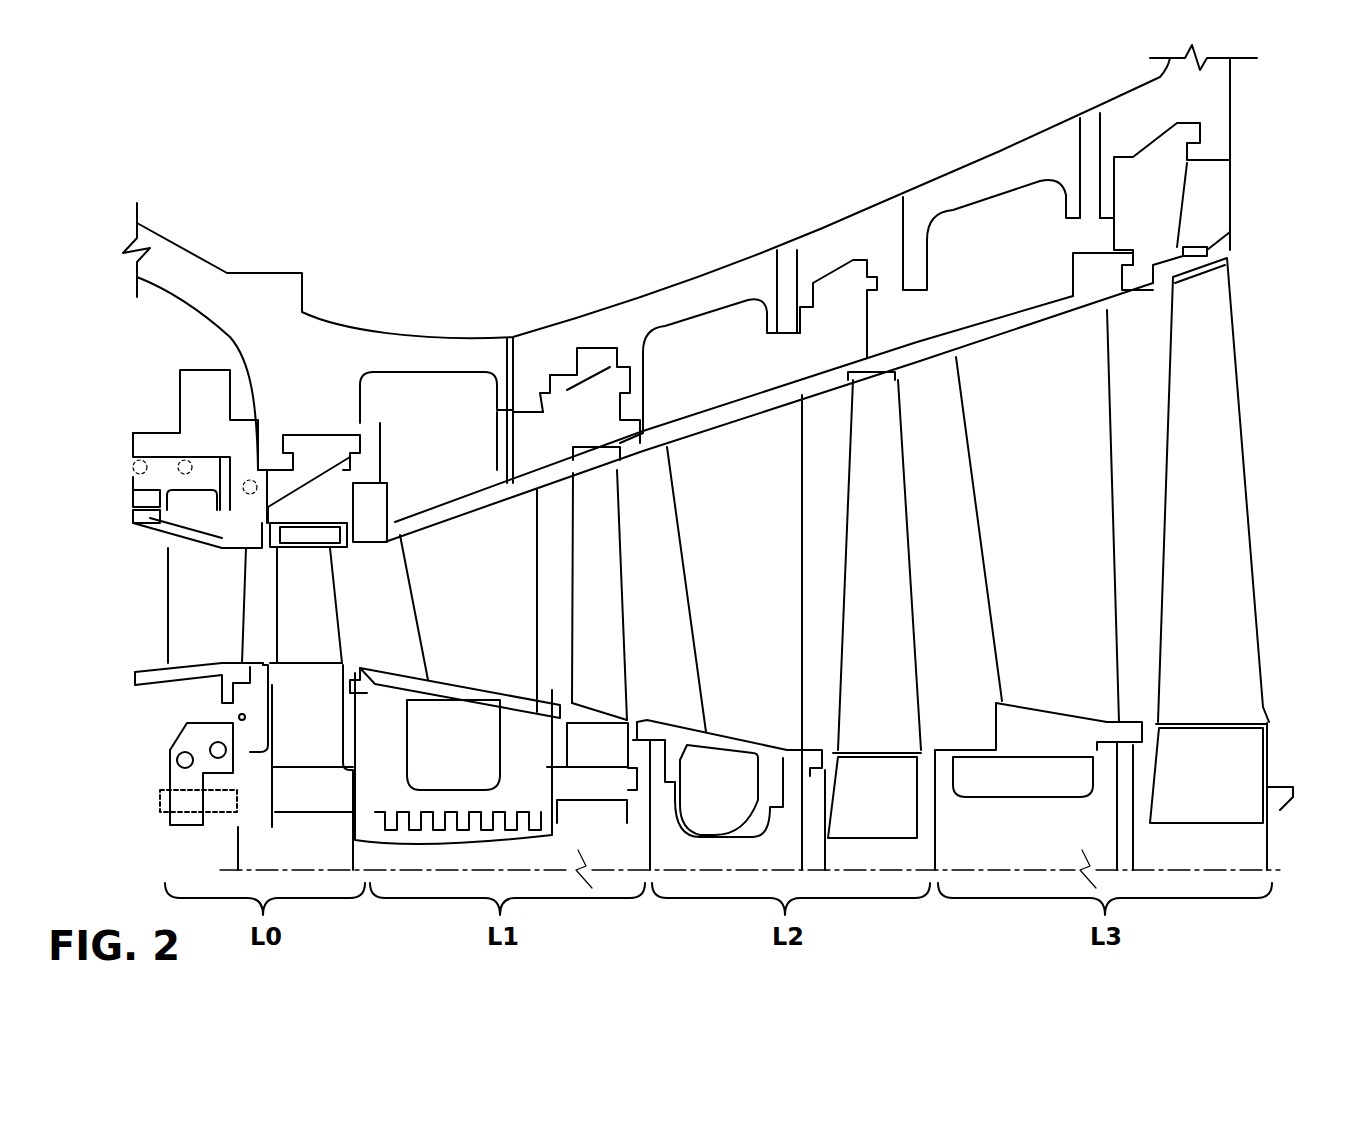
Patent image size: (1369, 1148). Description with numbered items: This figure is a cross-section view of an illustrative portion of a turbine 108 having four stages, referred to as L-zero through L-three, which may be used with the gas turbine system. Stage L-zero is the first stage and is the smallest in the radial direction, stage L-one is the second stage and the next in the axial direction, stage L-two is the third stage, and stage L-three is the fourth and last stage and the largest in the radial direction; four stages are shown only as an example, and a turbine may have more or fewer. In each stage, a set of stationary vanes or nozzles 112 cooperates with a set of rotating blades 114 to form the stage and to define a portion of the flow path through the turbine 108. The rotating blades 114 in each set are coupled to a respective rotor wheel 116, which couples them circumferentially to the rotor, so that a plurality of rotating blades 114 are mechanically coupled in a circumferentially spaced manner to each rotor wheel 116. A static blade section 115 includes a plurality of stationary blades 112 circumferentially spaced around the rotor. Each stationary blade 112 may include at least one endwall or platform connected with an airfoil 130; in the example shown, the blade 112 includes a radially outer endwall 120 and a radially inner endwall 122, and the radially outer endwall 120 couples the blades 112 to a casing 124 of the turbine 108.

The turbine 108 is at (427, 320).
The stationary vanes or nozzles 112 is at (227, 614).
The rotating blades 114 is at (329, 624).
The static blade section 115 is at (740, 407).
The rotor wheel 116 is at (325, 800).
The radially outer endwall 120 is at (470, 512).
The radially inner endwall 122 is at (513, 700).
The casing 124 is at (485, 353).
The airfoil 130 is at (485, 611).